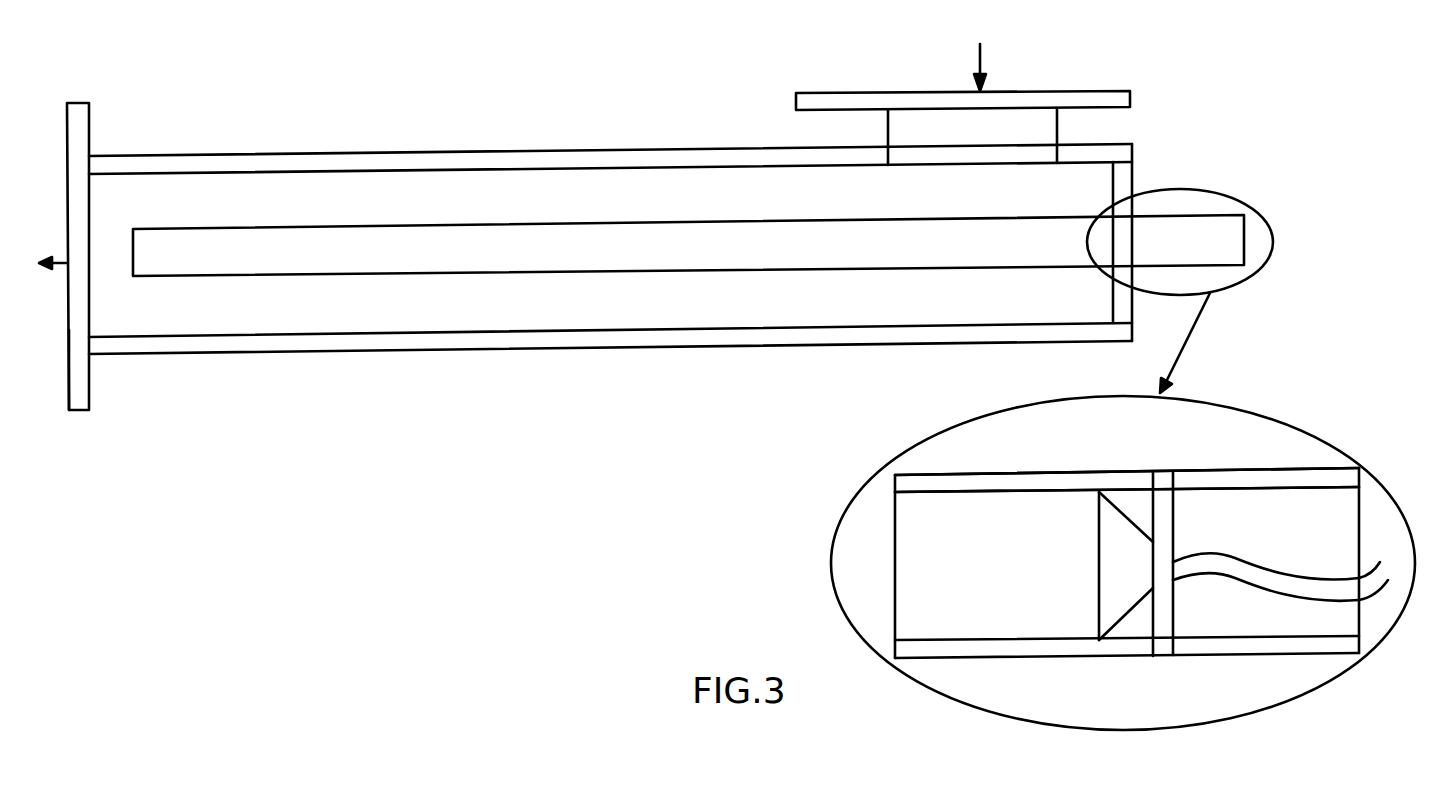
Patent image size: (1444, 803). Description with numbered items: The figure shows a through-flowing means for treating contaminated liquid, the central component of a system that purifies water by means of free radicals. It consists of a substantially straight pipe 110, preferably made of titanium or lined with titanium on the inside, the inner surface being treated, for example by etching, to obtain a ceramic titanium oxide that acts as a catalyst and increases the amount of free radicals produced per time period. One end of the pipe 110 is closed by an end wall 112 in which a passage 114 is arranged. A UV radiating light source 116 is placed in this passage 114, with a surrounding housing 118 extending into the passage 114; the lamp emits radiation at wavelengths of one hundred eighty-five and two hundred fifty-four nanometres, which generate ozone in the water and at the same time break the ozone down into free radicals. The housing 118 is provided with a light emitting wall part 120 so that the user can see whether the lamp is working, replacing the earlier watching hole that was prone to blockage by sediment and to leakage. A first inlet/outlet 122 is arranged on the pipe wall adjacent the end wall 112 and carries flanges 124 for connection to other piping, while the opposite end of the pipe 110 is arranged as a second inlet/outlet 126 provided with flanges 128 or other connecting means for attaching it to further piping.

The pipe 110 is at (419, 160).
The end wall 112 is at (1125, 183).
The passage 114 is at (915, 543).
The UV radiating light source 116 is at (650, 254).
The housing 118 is at (995, 492).
The light emitting wall part 120 is at (1165, 522).
The first inlet/outlet 122 is at (907, 132).
The flanges 124 is at (1078, 100).
The second inlet/outlet 126 is at (80, 223).
The flanges 128 is at (82, 385).